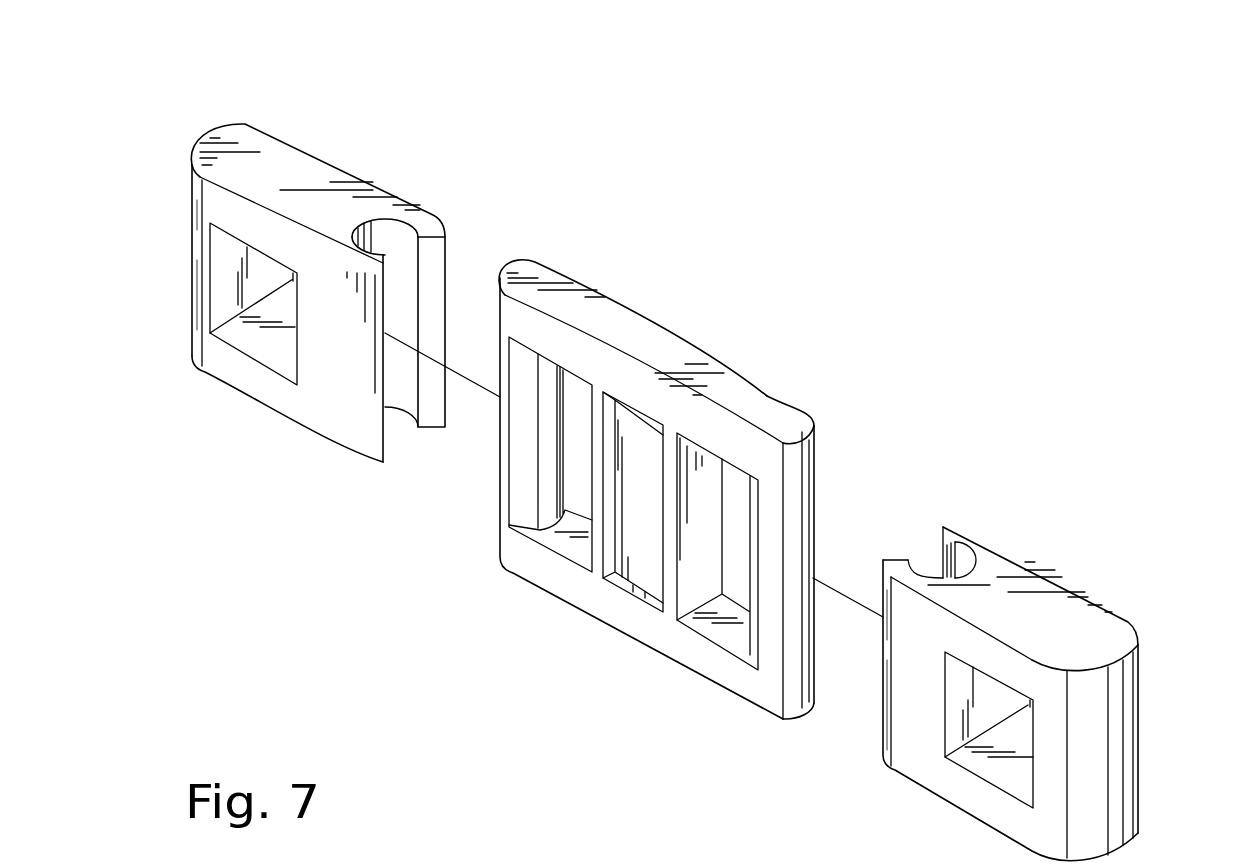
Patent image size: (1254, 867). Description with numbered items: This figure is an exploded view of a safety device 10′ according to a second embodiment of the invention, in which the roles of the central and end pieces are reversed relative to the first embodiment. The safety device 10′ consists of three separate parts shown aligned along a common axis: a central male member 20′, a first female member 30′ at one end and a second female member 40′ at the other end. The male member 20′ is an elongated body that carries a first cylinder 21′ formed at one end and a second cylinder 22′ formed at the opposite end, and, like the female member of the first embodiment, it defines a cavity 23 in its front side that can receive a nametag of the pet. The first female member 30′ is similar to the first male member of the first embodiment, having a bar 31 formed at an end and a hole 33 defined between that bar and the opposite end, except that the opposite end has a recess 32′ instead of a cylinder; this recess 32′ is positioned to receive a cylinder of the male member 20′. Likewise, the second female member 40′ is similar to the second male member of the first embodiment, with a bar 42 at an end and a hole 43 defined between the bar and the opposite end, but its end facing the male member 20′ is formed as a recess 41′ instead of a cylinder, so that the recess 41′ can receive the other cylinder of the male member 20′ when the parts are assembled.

The safety device 10′ is at (618, 252).
The male member 20′ is at (666, 355).
The first cylinder 21′ is at (783, 512).
The second cylinder 22′ is at (530, 392).
The cavity 23 is at (640, 563).
The first female member 30′ is at (1060, 603).
The bar 31 is at (1105, 707).
The recess 32′ is at (953, 560).
The hole 33 is at (1000, 745).
The second female member 40′ is at (308, 180).
The recess 41′ is at (387, 237).
The bar 42 is at (200, 243).
The hole 43 is at (227, 293).